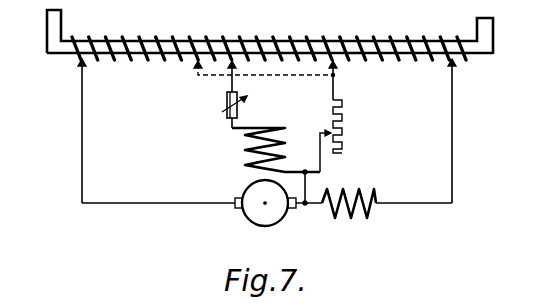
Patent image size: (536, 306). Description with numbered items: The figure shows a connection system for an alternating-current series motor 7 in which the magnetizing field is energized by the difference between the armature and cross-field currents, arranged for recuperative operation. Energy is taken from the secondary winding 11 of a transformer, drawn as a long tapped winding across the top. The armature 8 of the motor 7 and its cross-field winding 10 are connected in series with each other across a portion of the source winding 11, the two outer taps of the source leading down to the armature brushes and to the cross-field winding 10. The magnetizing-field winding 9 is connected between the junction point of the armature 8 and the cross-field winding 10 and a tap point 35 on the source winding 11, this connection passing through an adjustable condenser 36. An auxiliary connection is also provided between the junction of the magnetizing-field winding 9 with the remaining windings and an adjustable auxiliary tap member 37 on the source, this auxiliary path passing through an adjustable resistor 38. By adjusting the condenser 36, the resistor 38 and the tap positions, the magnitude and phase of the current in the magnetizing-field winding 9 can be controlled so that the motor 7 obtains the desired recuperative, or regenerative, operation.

The secondary winding 11 is at (270, 38).
The tap point 35 is at (232, 85).
The adjustable condenser 36 is at (227, 105).
The adjustable auxiliary tap member 37 is at (335, 86).
The adjustable resistor 38 is at (344, 118).
The magnetizing-field winding 9 is at (287, 144).
The alternating-current motor 7 is at (232, 187).
The armature 8 is at (265, 217).
The cross-field winding 10 is at (337, 196).